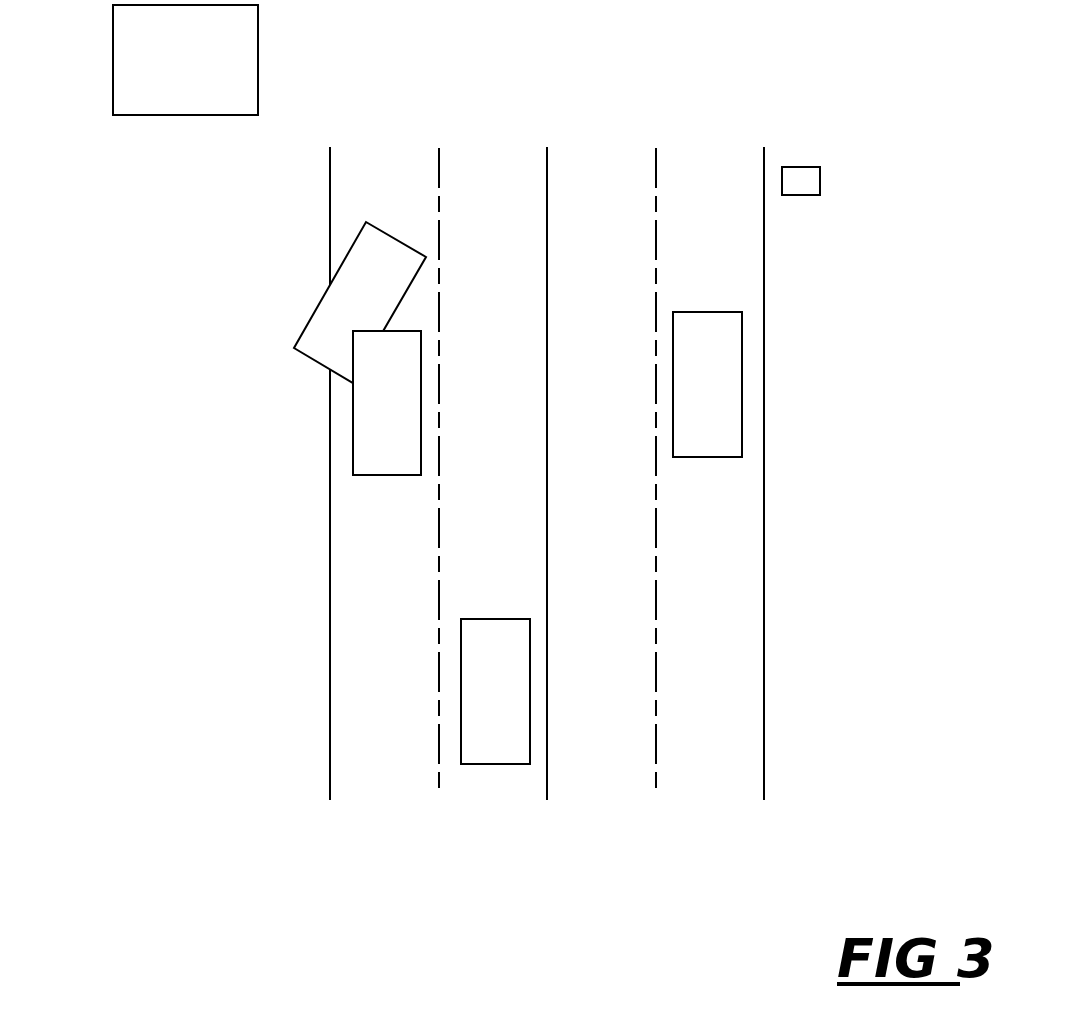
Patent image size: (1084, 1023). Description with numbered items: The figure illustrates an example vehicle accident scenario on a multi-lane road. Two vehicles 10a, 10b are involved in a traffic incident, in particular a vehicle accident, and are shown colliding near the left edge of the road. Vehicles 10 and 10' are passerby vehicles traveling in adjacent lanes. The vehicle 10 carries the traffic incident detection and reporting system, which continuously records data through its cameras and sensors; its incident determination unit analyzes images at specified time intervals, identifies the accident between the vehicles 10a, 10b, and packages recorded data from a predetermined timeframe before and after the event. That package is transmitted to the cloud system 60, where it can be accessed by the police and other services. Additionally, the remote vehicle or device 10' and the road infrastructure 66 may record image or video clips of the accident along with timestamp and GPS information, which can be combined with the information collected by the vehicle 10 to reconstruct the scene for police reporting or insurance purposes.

The cloud system 60 is at (137, 115).
The vehicle 10a is at (320, 302).
The vehicle 10b is at (353, 413).
The vehicle 10 is at (453, 754).
The vehicle 10' is at (759, 354).
The road infrastructure 66 is at (820, 187).